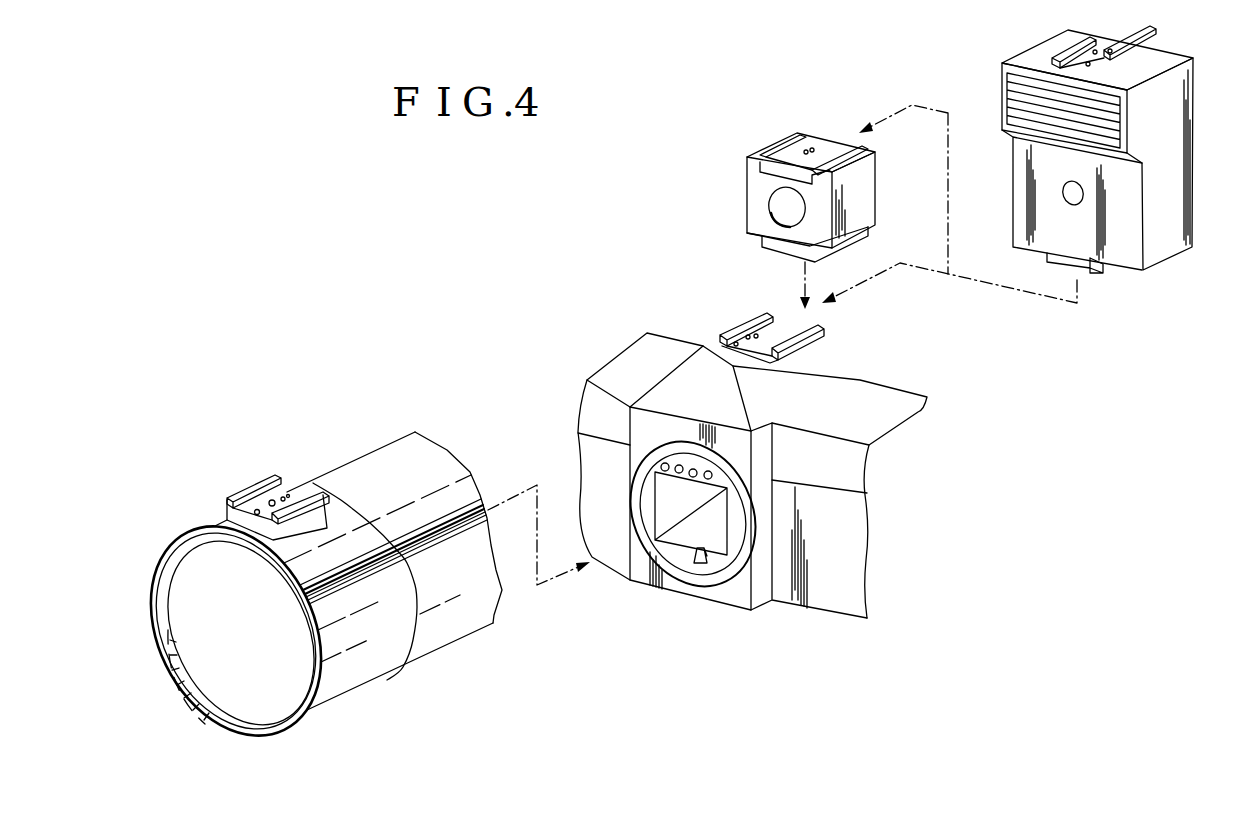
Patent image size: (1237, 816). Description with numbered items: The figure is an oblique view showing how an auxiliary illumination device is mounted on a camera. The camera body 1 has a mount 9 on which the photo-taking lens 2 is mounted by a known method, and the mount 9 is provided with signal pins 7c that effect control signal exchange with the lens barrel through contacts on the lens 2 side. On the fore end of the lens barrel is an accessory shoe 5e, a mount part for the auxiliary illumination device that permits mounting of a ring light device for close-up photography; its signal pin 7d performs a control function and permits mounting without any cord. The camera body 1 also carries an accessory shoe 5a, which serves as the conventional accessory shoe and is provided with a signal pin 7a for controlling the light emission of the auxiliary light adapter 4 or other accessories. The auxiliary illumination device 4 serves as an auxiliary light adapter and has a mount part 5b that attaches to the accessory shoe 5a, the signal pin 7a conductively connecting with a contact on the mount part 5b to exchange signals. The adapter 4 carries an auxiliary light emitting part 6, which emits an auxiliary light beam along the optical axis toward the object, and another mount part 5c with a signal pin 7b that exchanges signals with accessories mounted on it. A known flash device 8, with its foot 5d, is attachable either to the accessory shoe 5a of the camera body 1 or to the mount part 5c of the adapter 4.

The camera body 1 is at (837, 583).
The photo-taking lens 2 is at (372, 668).
The auxiliary illumination device 4 is at (753, 175).
The accessory shoe 5a is at (810, 333).
The mount part 5b is at (762, 245).
The mount part 5c is at (820, 140).
The shoe foot of flash 5d is at (1095, 273).
The accessory shoe 5e is at (247, 495).
The auxiliary light emitting part 6 is at (770, 210).
The signal pin 7a is at (760, 332).
The signal pin 7b is at (817, 153).
The signal pins 7c is at (660, 463).
The signal pin 7d is at (285, 485).
The flash device 8 is at (1158, 218).
The mount 9 is at (655, 540).